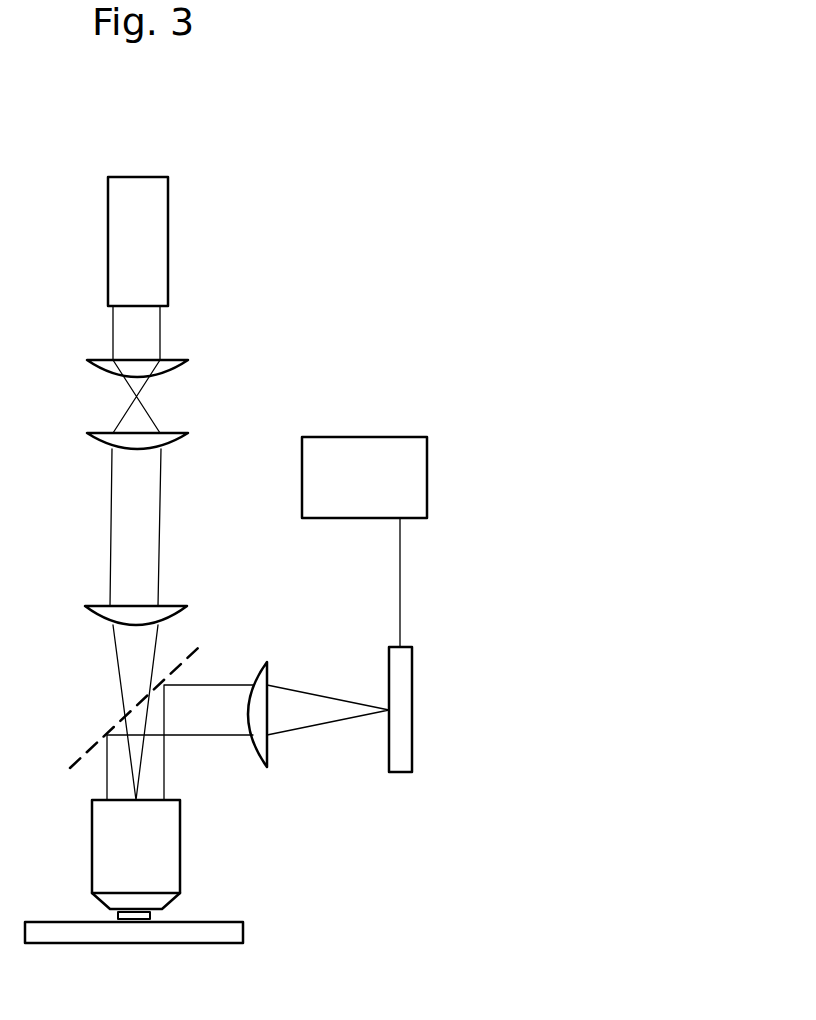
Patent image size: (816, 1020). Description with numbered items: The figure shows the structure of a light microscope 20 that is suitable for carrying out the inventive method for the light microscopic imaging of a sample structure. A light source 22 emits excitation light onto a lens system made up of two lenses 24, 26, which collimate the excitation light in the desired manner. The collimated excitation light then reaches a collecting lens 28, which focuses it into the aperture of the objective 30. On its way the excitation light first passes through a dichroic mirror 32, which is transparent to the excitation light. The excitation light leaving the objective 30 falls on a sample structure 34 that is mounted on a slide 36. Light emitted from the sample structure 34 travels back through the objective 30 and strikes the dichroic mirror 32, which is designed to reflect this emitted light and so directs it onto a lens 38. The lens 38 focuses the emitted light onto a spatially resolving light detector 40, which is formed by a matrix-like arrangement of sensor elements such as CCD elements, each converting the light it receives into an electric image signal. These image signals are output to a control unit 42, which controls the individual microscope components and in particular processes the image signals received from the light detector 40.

The light microscope 20 is at (335, 180).
The light source 22 is at (170, 242).
The lens 24 is at (177, 360).
The lens 26 is at (177, 433).
The collecting lens 28 is at (173, 605).
The objective 30 is at (180, 853).
The dichroic mirror 32 is at (88, 757).
The sample structure 34 is at (150, 915).
The slide 36 is at (243, 933).
The lens 38 is at (273, 675).
The spatially resolving light detector 40 is at (412, 700).
The control unit 42 is at (427, 490).